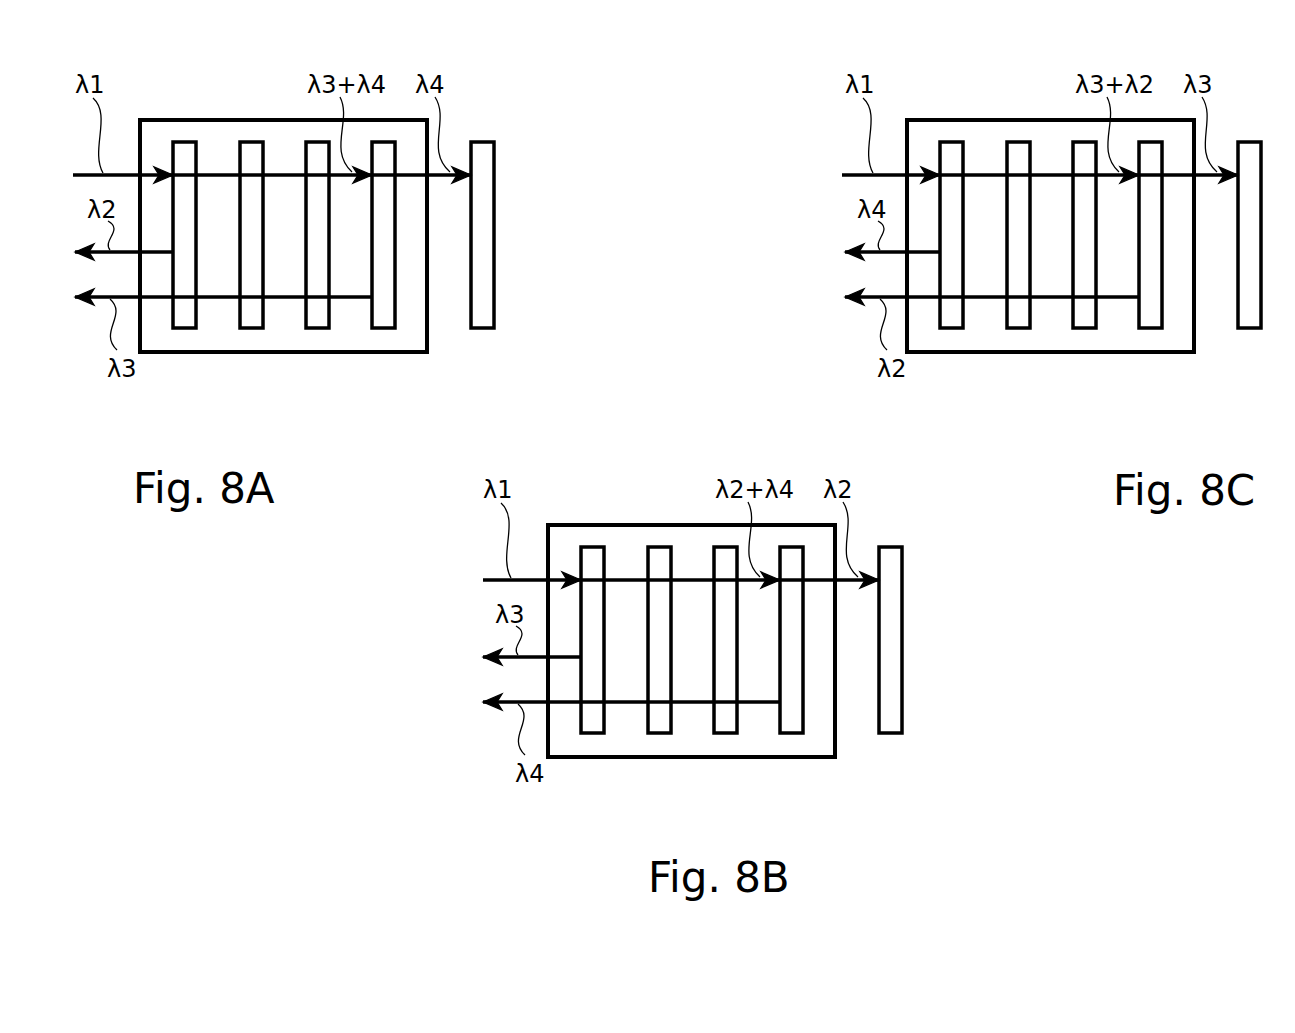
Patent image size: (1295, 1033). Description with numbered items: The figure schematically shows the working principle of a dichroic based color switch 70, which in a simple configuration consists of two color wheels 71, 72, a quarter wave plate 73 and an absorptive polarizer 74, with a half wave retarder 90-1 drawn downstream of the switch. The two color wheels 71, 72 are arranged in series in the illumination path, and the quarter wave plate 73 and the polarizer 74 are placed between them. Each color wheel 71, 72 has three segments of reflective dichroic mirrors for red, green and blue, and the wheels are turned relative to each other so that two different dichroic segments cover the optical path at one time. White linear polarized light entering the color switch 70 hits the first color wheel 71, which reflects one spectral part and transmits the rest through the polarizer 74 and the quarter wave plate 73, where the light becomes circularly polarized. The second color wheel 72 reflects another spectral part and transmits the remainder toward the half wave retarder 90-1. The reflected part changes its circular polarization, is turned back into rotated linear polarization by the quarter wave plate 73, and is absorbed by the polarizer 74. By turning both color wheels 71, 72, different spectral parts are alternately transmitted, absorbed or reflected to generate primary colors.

In FIG. 8A, the color switch 70 is at (190, 82).
In FIG. 8C, the color switch 70 is at (1049, 191).
In FIG. 8B, the color switch 70 is at (691, 586).
In FIG. 8A, the first color wheel 71 is at (183, 317).
In FIG. 8C, the first color wheel 71 is at (959, 285).
In FIG. 8B, the first color wheel 71 is at (600, 690).
In FIG. 8A, the second color wheel 72 is at (382, 317).
In FIG. 8C, the second color wheel 72 is at (1158, 285).
In FIG. 8B, the second color wheel 72 is at (799, 690).
In FIG. 8A, the quarter wave plate 73 is at (316, 317).
In FIG. 8C, the quarter wave plate 73 is at (1092, 285).
In FIG. 8B, the quarter wave plate 73 is at (733, 690).
In FIG. 8A, the absorptive polarizer 74 is at (250, 317).
In FIG. 8C, the absorptive polarizer 74 is at (1026, 285).
In FIG. 8B, the absorptive polarizer 74 is at (667, 690).
In FIG. 8A, the half wave retarder 90-1 is at (481, 317).
In FIG. 8C, the half wave retarder 90-1 is at (1250, 277).
In FIG. 8B, the half wave retarder 90-1 is at (911, 690).